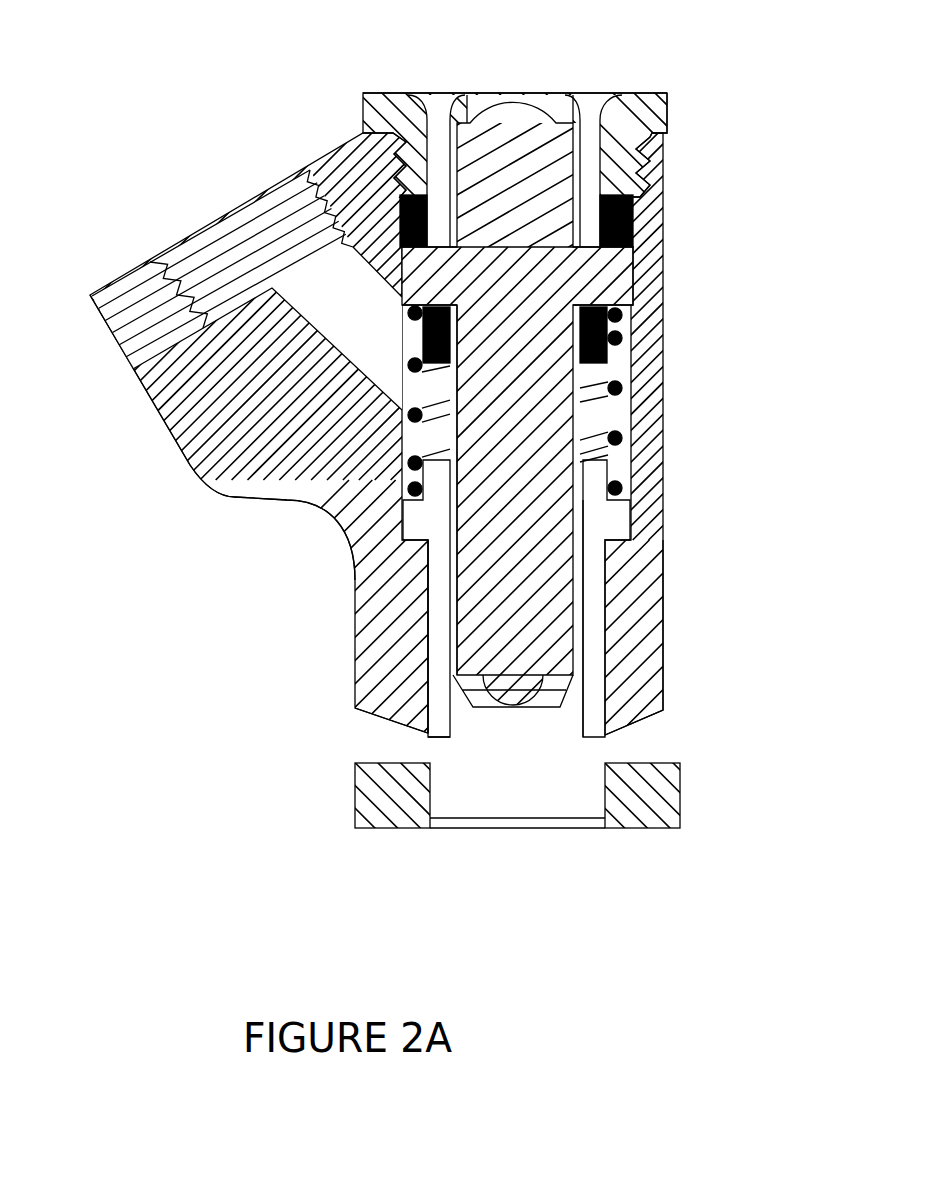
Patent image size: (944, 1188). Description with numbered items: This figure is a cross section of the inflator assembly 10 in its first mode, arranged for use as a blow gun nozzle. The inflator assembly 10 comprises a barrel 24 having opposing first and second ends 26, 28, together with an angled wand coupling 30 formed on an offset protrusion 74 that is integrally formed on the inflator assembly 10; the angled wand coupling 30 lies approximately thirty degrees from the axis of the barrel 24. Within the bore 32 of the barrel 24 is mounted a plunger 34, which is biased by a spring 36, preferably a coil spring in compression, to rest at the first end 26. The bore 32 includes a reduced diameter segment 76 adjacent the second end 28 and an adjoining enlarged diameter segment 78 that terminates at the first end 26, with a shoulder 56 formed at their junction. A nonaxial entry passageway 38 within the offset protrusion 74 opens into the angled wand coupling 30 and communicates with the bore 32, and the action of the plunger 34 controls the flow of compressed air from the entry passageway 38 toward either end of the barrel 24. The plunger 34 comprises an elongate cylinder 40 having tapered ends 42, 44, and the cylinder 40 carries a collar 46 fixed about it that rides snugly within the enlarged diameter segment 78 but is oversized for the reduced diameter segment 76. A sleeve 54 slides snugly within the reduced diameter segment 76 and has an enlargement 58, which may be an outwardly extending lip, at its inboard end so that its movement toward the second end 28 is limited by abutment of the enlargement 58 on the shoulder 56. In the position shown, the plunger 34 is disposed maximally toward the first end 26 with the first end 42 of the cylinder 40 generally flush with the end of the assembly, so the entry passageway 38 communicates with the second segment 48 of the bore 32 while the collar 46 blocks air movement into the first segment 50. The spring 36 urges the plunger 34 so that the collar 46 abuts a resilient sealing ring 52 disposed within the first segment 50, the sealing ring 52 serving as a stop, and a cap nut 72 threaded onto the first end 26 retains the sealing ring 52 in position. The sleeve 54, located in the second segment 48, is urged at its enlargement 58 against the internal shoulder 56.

The inflator assembly 10 is at (652, 303).
The barrel 24 is at (652, 575).
The first end 26 is at (643, 93).
The second end 28 is at (462, 828).
The angled wand coupling 30 is at (232, 227).
The bore 32 is at (455, 597).
The plunger 34 is at (577, 425).
The spring 36 is at (628, 330).
The entry passageway 38 is at (207, 480).
The elongate cylinder 40 is at (557, 627).
The first end 42 is at (515, 93).
The tapered end 44 is at (517, 707).
The collar 46 is at (617, 272).
The second segment 48 is at (450, 753).
The first segment 50 is at (440, 117).
The resilient sealing ring 52 is at (627, 188).
The sleeve 54 is at (592, 650).
The shoulder 56 is at (377, 573).
The enlargement 58 is at (612, 520).
The cap nut 72 is at (645, 108).
The offset protrusion 74 is at (162, 385).
The reduced diameter segment 76 is at (427, 643).
The enlarged diameter segment 78 is at (617, 370).